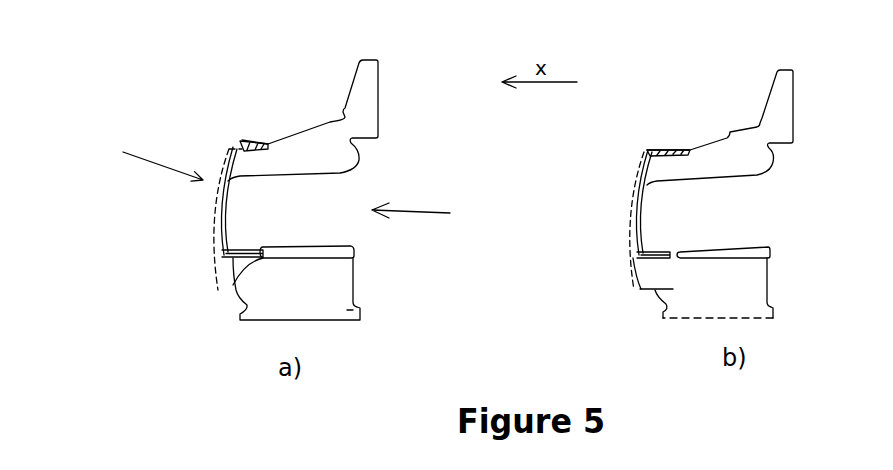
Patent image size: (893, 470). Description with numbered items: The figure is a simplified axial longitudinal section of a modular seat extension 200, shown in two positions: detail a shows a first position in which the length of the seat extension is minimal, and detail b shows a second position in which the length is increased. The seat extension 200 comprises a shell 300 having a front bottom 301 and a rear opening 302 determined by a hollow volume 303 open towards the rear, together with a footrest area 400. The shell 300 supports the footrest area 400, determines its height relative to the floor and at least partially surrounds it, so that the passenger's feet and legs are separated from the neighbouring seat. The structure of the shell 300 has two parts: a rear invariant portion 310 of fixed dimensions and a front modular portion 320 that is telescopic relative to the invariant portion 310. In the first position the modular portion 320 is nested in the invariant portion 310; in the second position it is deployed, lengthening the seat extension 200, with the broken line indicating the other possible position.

The modular seat extension 200 is at (217, 73).
The shell 300 is at (317, 137).
The front bottom 301 is at (141, 158).
The rear opening 302 is at (435, 216).
The hollow volume 303 is at (320, 210).
The rear invariant portion 310 is at (287, 137).
The front modular portion 320 is at (228, 206).
The footrest area 400 is at (245, 286).